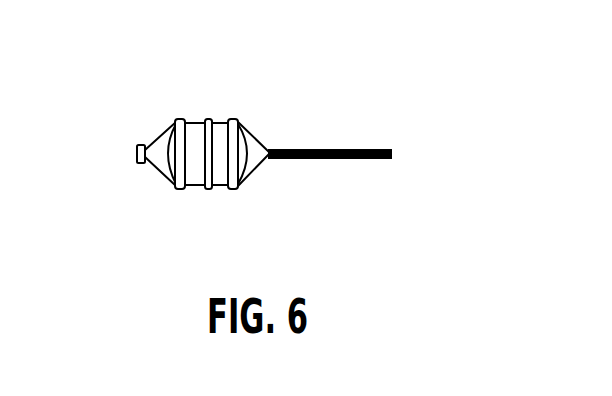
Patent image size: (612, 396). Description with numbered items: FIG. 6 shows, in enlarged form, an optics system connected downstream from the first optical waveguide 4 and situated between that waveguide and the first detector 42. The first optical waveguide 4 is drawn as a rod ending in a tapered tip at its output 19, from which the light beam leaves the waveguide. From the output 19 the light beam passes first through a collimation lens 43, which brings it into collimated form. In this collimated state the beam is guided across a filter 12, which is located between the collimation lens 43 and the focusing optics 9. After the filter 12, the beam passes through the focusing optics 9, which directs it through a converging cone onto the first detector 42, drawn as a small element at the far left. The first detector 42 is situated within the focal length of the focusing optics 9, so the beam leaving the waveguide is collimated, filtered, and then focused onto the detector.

The first optical waveguide 4 is at (330, 150).
The focusing optics 9 is at (180, 120).
The filter 12 is at (208, 120).
The collimation lens 43 is at (233, 120).
The first detector 42 is at (143, 144).
The output 19 is at (271, 157).